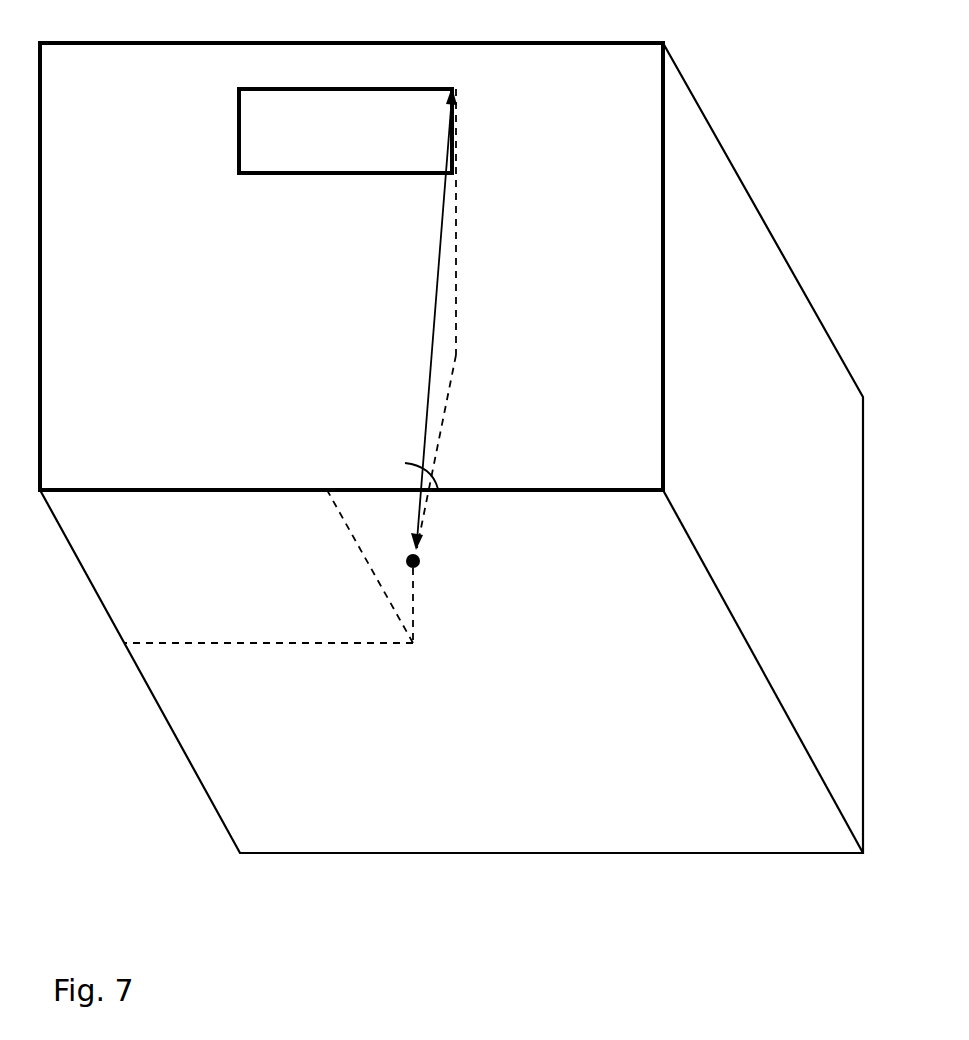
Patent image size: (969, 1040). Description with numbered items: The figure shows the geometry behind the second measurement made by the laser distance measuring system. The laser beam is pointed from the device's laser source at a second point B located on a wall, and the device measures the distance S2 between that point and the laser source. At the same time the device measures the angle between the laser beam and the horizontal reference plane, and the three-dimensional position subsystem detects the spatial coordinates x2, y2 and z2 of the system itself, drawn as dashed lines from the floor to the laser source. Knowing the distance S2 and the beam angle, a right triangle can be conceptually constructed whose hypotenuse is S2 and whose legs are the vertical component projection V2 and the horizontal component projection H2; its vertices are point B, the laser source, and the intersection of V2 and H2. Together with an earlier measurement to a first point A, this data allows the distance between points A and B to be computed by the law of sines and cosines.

The first point A is at (339, 115).
The second point B is at (446, 73).
The distance S2 is at (416, 327).
The vertical component projection V2 is at (479, 222).
The horizontal component projection H2 is at (453, 451).
The X coordinate x2 is at (269, 667).
The Y coordinate y2 is at (370, 566).
The Z coordinate z2 is at (423, 605).